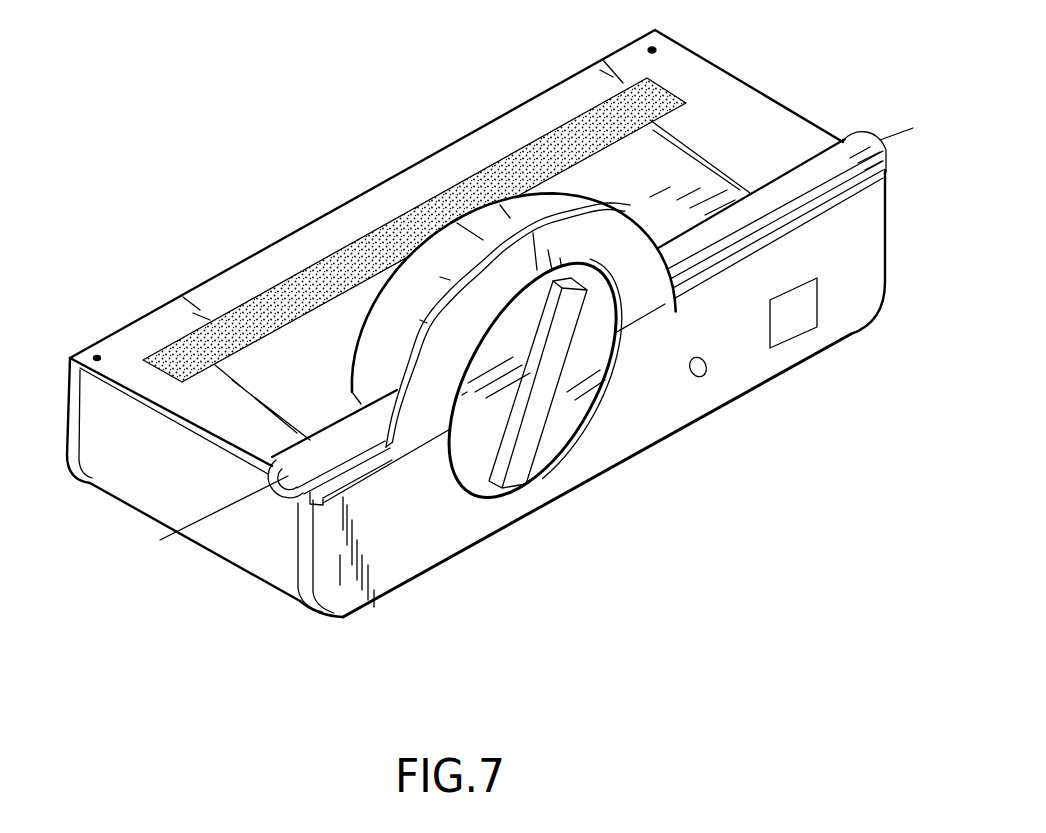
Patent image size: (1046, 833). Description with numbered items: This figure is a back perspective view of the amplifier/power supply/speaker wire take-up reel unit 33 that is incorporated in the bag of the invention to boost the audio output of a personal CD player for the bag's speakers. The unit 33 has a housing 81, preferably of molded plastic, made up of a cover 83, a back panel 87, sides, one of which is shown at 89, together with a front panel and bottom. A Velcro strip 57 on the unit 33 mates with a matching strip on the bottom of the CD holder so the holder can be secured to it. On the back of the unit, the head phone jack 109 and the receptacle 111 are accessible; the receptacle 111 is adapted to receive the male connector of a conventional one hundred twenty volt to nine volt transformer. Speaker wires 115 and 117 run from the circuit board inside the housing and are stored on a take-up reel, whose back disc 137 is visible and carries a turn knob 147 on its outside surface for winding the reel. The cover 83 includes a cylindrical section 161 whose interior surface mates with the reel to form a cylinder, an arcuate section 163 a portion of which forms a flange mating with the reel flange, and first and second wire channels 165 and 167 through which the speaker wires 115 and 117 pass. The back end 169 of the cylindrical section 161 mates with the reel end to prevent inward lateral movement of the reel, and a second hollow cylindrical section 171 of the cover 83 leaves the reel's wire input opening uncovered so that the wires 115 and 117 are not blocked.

The amplifier/power supply/speaker wire take-up reel unit 33 is at (481, 328).
The Velcro strip 57 is at (670, 88).
The housing 81 is at (119, 454).
The cover 83 is at (517, 141).
The back panel 87 is at (738, 387).
The side 89 is at (207, 540).
The head phone jack 109 is at (707, 366).
The receptacle 111 is at (812, 300).
The speaker wire 115 is at (230, 507).
The speaker wire 117 is at (893, 134).
The back disc 137 is at (560, 423).
The turn knob 147 is at (513, 480).
The cylindrical section 161 is at (433, 243).
The arcuate section 163 is at (593, 223).
The first wire channel 165 is at (357, 440).
The second wire channel 167 is at (737, 218).
The back end 169 is at (380, 237).
The second hollow cylindrical section 171 is at (317, 263).